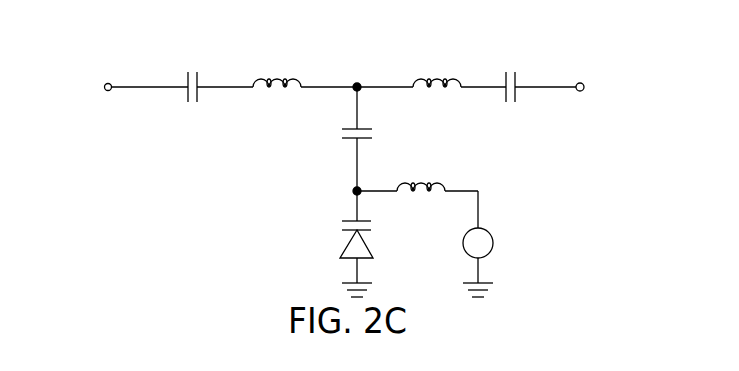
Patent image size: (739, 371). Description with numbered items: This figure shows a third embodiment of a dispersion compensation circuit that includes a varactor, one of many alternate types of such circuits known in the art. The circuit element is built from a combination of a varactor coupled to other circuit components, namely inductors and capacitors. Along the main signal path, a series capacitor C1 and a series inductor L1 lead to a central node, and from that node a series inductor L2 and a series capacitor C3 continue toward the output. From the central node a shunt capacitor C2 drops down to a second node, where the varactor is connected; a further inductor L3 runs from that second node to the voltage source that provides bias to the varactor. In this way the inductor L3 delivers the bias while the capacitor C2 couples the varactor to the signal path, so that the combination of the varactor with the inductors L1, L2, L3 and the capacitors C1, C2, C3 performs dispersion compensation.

The series capacitor C1 is at (194, 69).
The inductor L1 is at (277, 61).
The inductor L2 is at (437, 61).
The series capacitor C3 is at (512, 69).
The shunt capacitor C2 is at (340, 135).
The bias inductor L3 is at (421, 163).